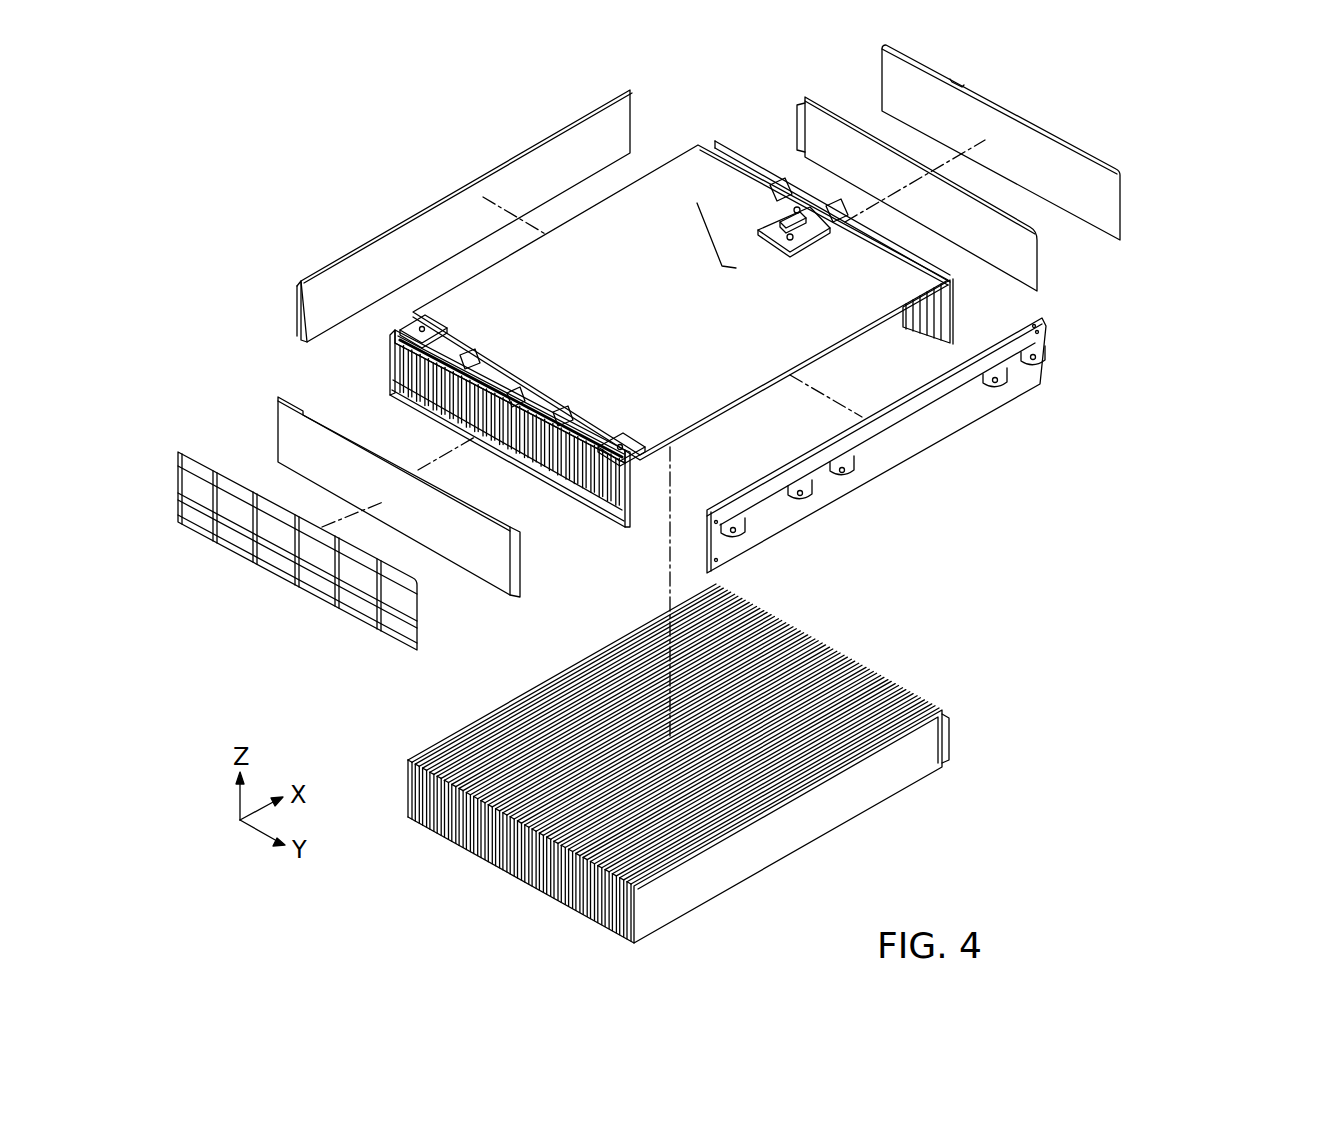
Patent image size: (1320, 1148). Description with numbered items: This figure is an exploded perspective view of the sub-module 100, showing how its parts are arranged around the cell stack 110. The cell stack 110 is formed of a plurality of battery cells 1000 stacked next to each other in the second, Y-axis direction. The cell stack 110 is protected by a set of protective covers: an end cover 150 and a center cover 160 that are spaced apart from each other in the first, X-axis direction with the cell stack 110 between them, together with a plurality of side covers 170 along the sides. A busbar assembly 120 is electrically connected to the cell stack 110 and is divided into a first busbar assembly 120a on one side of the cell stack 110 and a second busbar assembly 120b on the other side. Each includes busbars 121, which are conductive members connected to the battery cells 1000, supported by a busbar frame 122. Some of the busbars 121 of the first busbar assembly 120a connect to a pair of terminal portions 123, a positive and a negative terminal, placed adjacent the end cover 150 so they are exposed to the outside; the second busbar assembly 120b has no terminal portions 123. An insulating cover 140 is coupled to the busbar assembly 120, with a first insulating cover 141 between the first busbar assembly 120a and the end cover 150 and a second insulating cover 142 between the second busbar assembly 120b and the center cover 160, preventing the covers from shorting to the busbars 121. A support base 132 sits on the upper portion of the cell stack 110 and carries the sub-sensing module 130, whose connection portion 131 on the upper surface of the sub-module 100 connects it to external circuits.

The sub-module 100 is at (300, 131).
The cell stack 110 is at (708, 763).
The battery cell 1000 is at (878, 780).
The busbar assembly 120 is at (1166, 660).
The first busbar assembly 120a is at (378, 372).
The second busbar assembly 120b is at (968, 312).
The busbar 121 is at (553, 463).
The busbar frame 122 is at (500, 420).
The terminal portion 123 is at (400, 322).
The sub-sensing module 130 is at (795, 212).
The connection portion 131 is at (783, 226).
The support base 132 is at (592, 230).
The insulating cover 140 is at (749, 374).
The first insulating cover 141 is at (482, 567).
The second insulating cover 142 is at (1010, 248).
The end cover 150 is at (278, 567).
The center cover 160 is at (1100, 203).
The side cover 170 is at (432, 225).